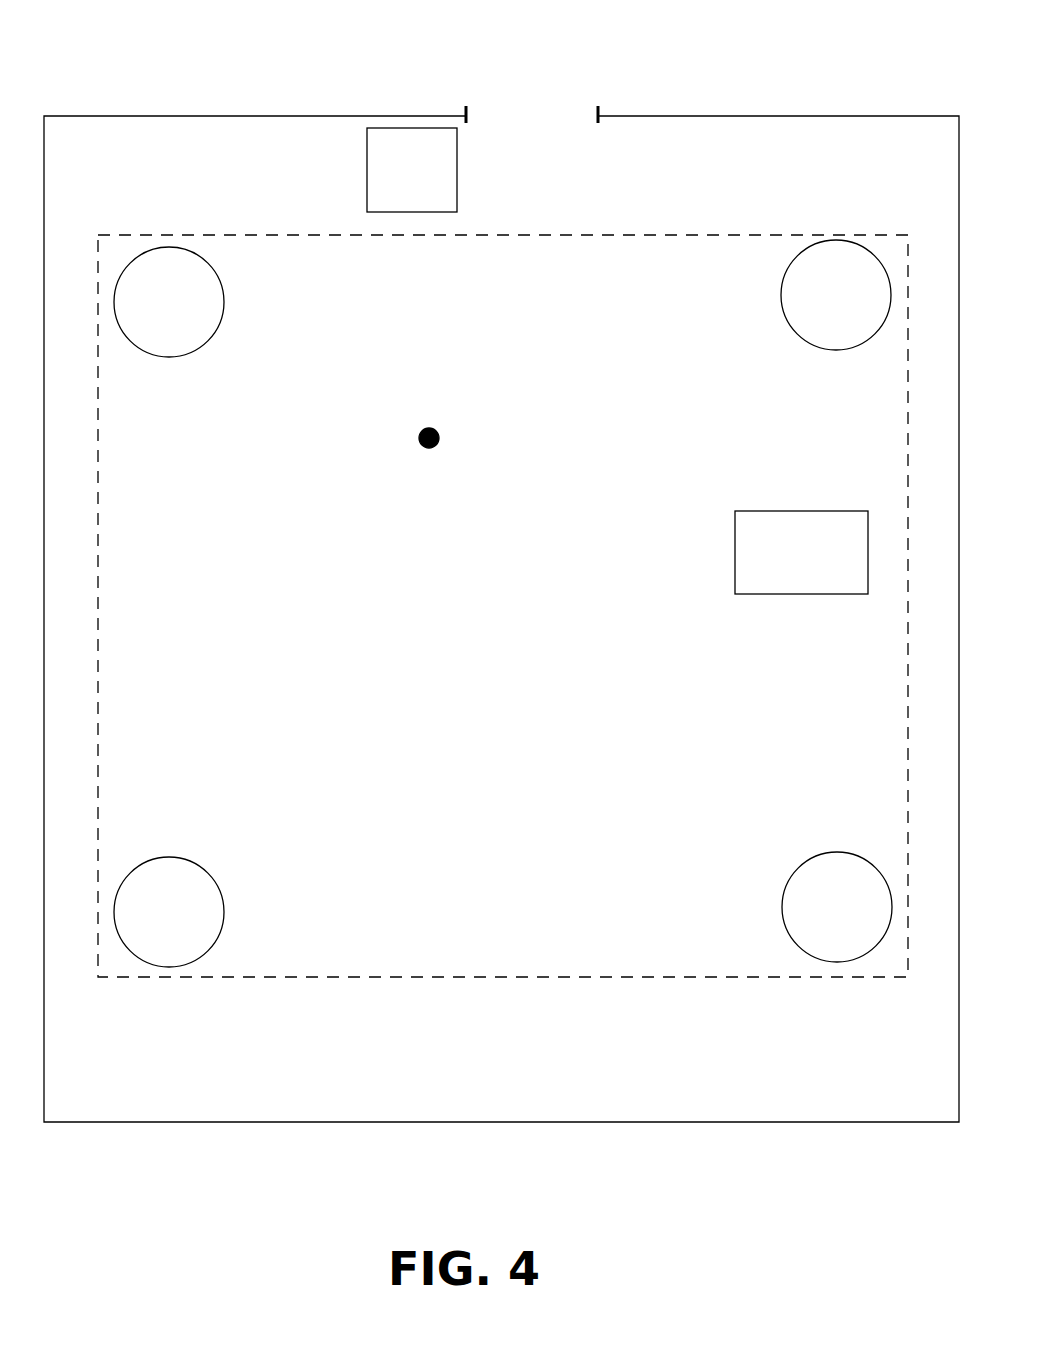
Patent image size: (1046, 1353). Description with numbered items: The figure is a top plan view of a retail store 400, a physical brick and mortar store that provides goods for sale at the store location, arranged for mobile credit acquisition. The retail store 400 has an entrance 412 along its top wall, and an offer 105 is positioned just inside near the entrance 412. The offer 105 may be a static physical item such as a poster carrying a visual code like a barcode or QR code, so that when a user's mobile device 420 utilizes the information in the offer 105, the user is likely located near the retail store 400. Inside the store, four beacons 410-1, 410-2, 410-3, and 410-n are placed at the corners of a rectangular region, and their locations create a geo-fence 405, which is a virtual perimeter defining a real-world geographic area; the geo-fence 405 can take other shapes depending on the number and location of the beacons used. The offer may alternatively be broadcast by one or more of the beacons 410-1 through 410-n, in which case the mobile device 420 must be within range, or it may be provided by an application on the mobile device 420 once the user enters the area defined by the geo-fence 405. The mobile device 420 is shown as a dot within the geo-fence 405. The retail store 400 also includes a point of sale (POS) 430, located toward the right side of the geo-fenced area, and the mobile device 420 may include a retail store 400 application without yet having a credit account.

The retail store 400 is at (501, 569).
The entrance 412 is at (600, 115).
The offer 105 is at (412, 170).
The geo-fence 405 is at (272, 235).
The beacon 410-1 is at (169, 302).
The beacon 410-2 is at (169, 912).
The beacon 410-3 is at (836, 295).
The beacon 410-n is at (837, 907).
The mobile device 420 is at (422, 430).
The point of sale (POS) 430 is at (801, 552).